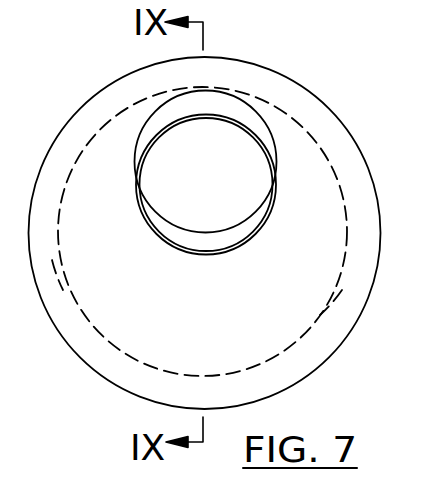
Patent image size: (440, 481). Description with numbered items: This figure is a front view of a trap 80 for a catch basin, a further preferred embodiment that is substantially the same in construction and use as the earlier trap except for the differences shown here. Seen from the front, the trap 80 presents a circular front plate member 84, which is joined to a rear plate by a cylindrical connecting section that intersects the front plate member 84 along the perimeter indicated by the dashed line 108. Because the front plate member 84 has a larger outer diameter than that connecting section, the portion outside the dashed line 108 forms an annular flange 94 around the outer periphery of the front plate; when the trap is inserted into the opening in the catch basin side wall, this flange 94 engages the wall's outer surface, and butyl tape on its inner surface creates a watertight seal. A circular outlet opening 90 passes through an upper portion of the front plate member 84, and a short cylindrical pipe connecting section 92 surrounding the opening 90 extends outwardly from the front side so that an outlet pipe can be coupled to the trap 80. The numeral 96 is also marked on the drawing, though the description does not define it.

The trap 80 is at (225, 226).
The front plate member 84 is at (335, 93).
The outlet opening 90 is at (160, 165).
The pipe connecting section 92 is at (238, 112).
The annular flange 94 is at (293, 365).
The groove 96 is at (63, 277).
The dashed line 108 is at (330, 302).